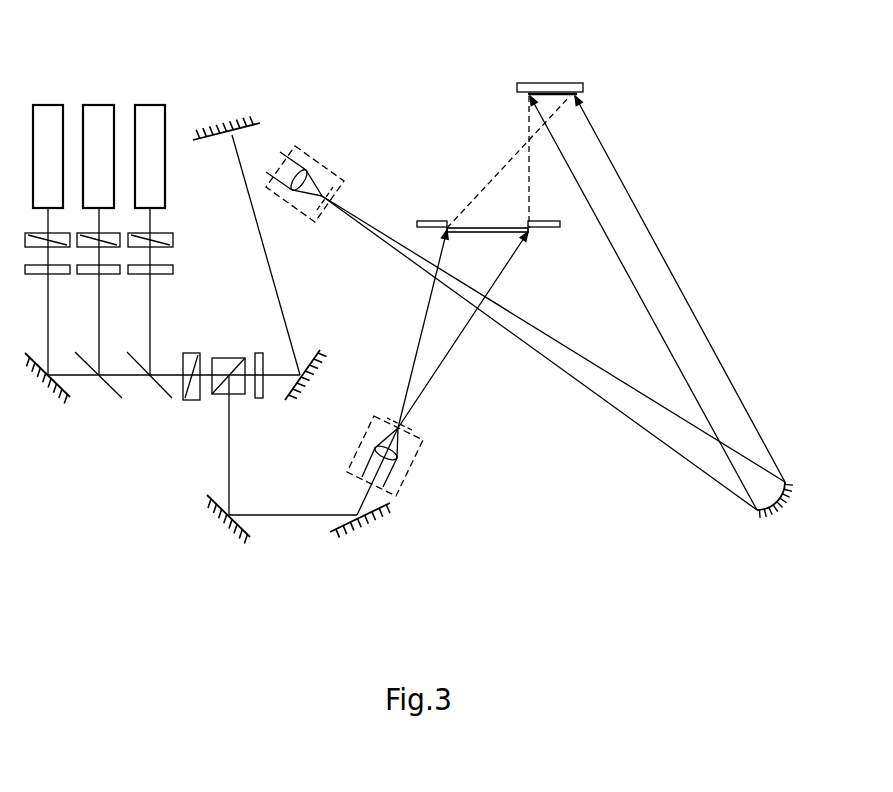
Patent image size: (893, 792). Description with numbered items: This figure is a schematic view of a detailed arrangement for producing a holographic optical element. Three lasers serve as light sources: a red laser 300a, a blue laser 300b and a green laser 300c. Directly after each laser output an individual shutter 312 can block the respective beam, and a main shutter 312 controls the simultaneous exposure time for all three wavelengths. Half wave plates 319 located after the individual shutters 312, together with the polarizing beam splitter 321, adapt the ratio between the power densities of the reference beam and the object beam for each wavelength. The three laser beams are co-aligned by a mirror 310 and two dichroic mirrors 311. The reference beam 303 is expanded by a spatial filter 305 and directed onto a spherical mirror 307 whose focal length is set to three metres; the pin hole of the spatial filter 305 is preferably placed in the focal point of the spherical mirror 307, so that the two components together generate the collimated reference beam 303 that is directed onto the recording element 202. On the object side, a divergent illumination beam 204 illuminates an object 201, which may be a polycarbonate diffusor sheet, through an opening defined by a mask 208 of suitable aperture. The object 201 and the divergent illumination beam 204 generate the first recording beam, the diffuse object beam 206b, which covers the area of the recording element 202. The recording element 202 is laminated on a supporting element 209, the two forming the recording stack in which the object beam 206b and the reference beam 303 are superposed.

The red laser 300a is at (56, 104).
The blue laser 300b is at (108, 104).
The green laser 300c is at (157, 104).
The mirror 310 is at (57, 400).
The dichroic mirror 311 is at (112, 396).
The shutter 312 is at (176, 238).
The half wave plate 319 is at (176, 268).
The polarizing beam splitter 321 is at (233, 358).
The spatial filter 305 is at (316, 153).
The object 201 is at (500, 232).
The mask 208 is at (553, 228).
The recording element 202 is at (543, 92).
The supporting element 209 is at (560, 92).
The divergent illumination beam 204 is at (445, 360).
The object beam 206b is at (503, 165).
The reference beam 303 is at (673, 275).
The spherical mirror 307 is at (760, 512).